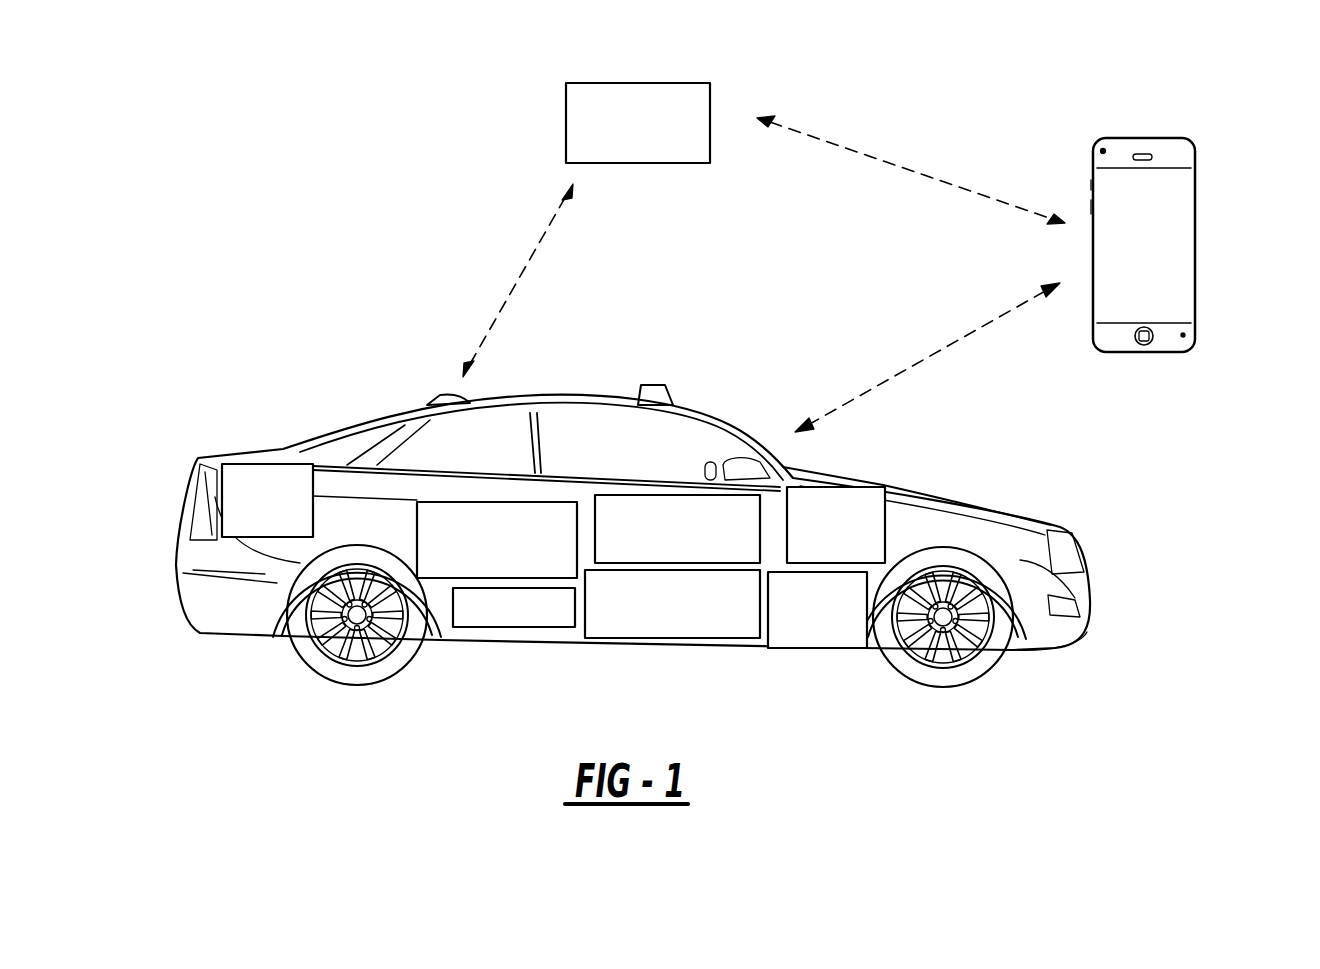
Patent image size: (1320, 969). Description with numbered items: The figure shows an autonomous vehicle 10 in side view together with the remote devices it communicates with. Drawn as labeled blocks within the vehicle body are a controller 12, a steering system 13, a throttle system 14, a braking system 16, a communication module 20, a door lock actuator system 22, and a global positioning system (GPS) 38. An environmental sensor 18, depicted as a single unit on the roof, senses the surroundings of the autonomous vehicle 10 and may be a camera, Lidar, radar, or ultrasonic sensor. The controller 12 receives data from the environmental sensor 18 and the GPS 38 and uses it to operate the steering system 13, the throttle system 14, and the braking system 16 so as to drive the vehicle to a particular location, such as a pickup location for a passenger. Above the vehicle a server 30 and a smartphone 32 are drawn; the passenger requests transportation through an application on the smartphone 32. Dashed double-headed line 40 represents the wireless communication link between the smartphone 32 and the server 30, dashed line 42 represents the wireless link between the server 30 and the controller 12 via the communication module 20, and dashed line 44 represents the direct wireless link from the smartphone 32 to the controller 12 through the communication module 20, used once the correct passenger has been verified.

The autonomous vehicle 10 is at (290, 248).
The controller 12 is at (533, 628).
The steering system 13 is at (897, 522).
The throttle system 14 is at (850, 655).
The braking system 16 is at (297, 464).
The environmental sensors 18 is at (653, 385).
The communication module 20 is at (683, 497).
The door lock actuator system 22 is at (670, 640).
The server 30 is at (566, 112).
The smartphone 32 is at (1195, 240).
The global positioning system (GPS) 38 is at (410, 513).
The wireless communication link 40 is at (908, 168).
The wireless communication link 42 is at (515, 285).
The direct wireless communication link 44 is at (962, 338).